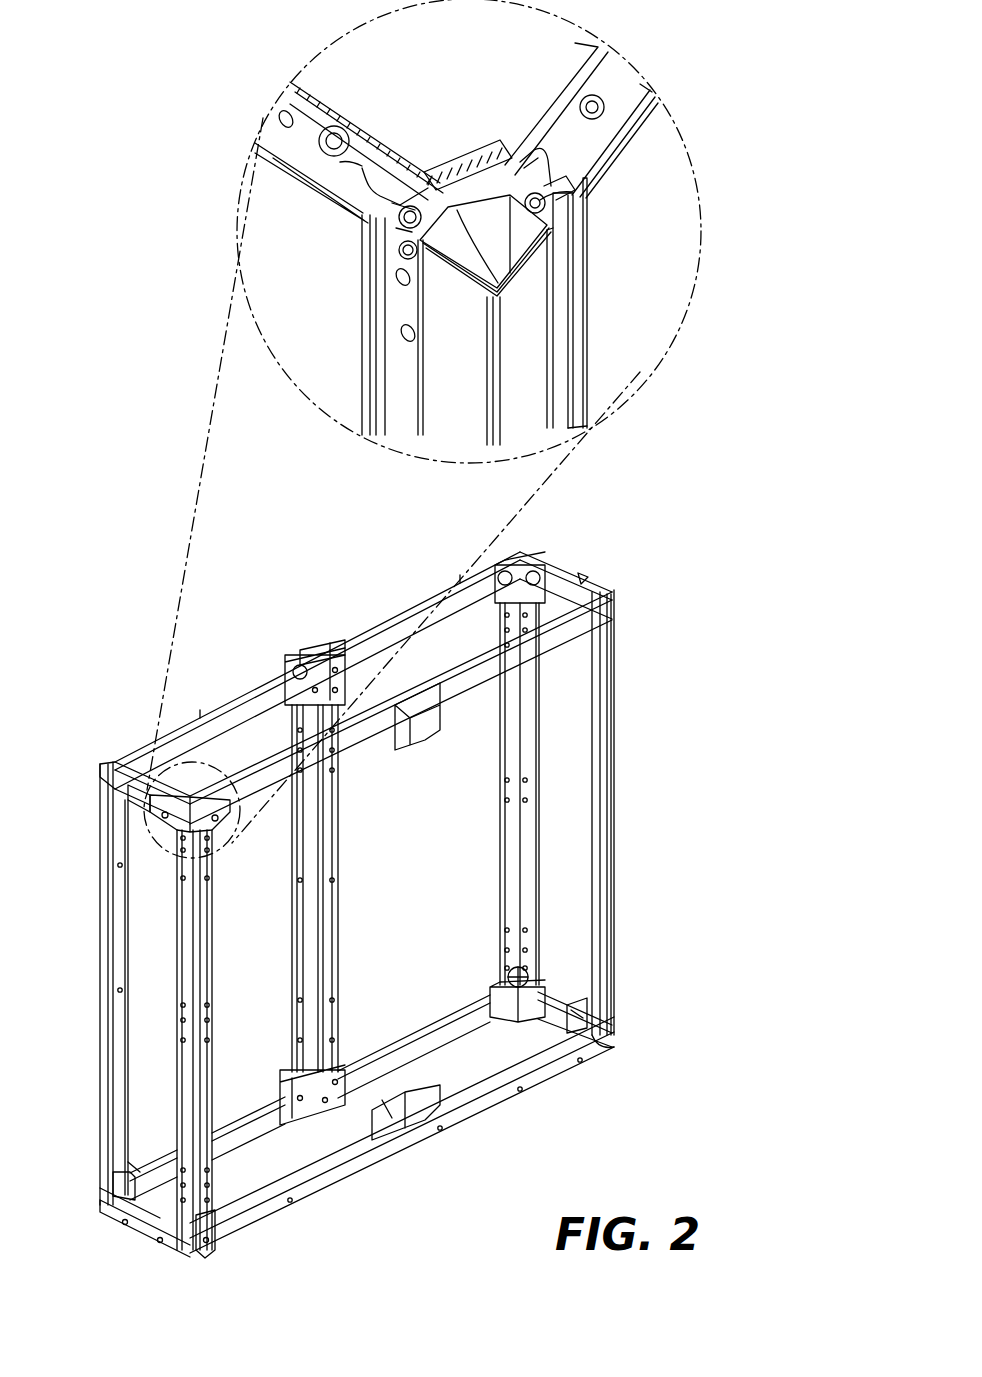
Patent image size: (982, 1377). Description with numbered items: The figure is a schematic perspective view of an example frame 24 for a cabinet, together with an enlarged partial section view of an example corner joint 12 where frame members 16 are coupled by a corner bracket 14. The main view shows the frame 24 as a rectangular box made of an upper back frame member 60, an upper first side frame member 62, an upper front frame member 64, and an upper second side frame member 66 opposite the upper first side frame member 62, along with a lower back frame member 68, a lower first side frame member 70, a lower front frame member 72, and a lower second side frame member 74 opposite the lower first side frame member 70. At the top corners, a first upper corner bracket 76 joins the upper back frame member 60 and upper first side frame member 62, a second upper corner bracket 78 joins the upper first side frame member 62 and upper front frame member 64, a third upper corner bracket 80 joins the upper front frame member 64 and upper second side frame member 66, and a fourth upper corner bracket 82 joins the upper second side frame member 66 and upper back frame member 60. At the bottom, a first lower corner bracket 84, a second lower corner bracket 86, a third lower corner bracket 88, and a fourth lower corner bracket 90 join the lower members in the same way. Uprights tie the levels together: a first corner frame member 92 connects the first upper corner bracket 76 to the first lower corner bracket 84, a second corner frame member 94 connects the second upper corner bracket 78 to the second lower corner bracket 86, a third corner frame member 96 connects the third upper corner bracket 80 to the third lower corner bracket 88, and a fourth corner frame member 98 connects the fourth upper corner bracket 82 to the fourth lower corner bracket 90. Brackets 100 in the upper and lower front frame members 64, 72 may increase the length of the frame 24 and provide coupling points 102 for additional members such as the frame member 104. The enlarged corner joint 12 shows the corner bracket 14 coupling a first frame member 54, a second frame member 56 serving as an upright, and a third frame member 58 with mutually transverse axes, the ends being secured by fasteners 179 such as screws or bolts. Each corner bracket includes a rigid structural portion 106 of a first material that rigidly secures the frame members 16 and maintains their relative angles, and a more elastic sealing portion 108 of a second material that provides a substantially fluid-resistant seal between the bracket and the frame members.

The corner joint 12 is at (463, 80).
The corner bracket 14 is at (489, 208).
The frame members 16 is at (295, 156).
The frame 24 is at (680, 566).
The first frame member 54 is at (633, 128).
The second frame member 56 is at (583, 338).
The third frame member 58 is at (300, 181).
The upper back frame member 60 is at (405, 626).
The upper first side frame member 62 is at (575, 575).
The upper front frame member 64 is at (460, 690).
The upper second side frame member 66 is at (140, 812).
The lower back frame member 68 is at (415, 1048).
The lower first side frame member 70 is at (565, 1002).
The lower front frame member 72 is at (540, 1072).
The lower second side frame member 74 is at (148, 1225).
The first upper corner bracket 76 is at (522, 556).
The second upper corner bracket 78 is at (615, 590).
The third upper corner bracket 80 is at (185, 833).
The fourth upper corner bracket 82 is at (115, 762).
The first lower corner bracket 84 is at (545, 978).
The second lower corner bracket 86 is at (612, 1046).
The third lower corner bracket 88 is at (208, 1252).
The fourth lower corner bracket 90 is at (110, 1200).
The first corner frame member 92 is at (535, 723).
The second corner frame member 94 is at (615, 792).
The third corner frame member 96 is at (205, 1085).
The fourth corner frame member 98 is at (100, 1048).
The brackets 100 is at (330, 650).
The coupling points 102 is at (292, 705).
The frame member 104 is at (330, 838).
The structural portion 106 is at (435, 158).
The sealing portion 108 is at (450, 165).
The fasteners 179 is at (341, 127).